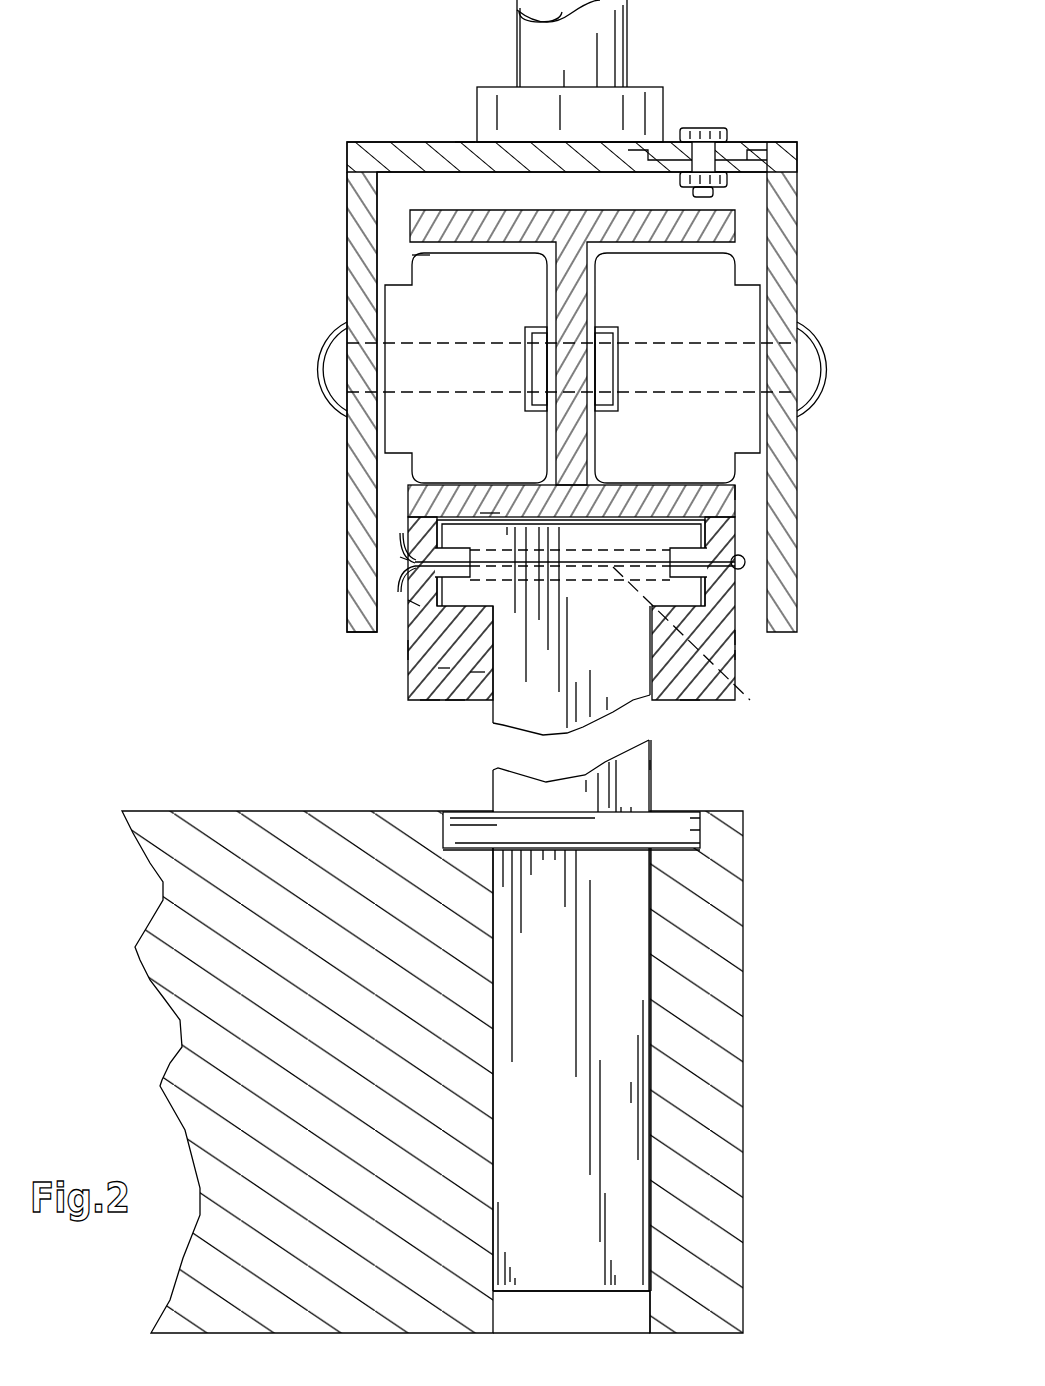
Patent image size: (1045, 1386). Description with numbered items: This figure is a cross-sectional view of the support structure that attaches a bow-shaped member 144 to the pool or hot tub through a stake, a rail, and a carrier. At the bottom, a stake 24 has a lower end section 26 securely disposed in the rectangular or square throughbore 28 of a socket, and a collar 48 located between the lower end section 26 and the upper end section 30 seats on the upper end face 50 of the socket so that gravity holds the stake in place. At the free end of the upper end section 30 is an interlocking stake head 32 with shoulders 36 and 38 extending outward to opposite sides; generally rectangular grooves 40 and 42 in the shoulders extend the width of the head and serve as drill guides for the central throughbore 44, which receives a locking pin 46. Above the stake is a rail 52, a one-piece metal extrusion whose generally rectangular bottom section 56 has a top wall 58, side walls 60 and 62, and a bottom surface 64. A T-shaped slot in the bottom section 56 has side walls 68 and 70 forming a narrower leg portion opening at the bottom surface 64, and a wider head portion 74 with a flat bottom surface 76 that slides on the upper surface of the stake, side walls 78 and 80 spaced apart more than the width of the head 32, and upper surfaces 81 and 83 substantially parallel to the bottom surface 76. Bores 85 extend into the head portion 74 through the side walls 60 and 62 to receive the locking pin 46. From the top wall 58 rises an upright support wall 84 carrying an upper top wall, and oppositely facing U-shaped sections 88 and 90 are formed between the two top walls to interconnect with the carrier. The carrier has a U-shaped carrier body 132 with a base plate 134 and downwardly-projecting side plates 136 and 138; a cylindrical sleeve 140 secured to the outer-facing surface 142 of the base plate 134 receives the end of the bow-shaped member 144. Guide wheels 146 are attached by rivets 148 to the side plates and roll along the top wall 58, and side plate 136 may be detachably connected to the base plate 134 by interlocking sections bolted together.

The stake 24 is at (662, 778).
The lower end section 26 is at (614, 975).
The throughbore 28 is at (649, 1133).
The upper end section 30 is at (500, 705).
The interlocking stake head 32 is at (733, 500).
The shoulder 36 is at (720, 600).
The shoulder 38 is at (407, 650).
The groove 40 is at (625, 535).
The groove 42 is at (445, 550).
The throughbore 44 is at (699, 638).
The locking pin 46 is at (683, 545).
The collar 48 is at (668, 823).
The upper end face 50 is at (673, 843).
The rail 52 is at (760, 648).
The bottom section 56 is at (438, 668).
The top wall 58 is at (737, 487).
The side wall 60 is at (700, 578).
The side wall 62 is at (440, 627).
The bottom surface 64 is at (427, 700).
The side wall 68 is at (695, 702).
The side wall 70 is at (453, 700).
The head portion 74 is at (410, 600).
The flat bottom surface 76 is at (480, 513).
The side wall 78 is at (745, 556).
The side wall 80 is at (400, 557).
The upper surface 81 is at (735, 640).
The upper surface 83 is at (470, 672).
The upright support wall 84 is at (583, 413).
The bore 85 is at (405, 595).
The U-shaped section 88 is at (749, 247).
The U-shaped section 90 is at (398, 252).
The U-shaped carrier body 132 is at (398, 163).
The base plate 134 is at (432, 153).
The side plate 136 is at (780, 170).
The side plate 138 is at (360, 182).
The cylindrical sleeve 140 is at (639, 103).
The outer-facing surface 142 is at (462, 138).
The bow-shaped member 144 is at (597, 33).
The guide wheel 146 is at (452, 313).
The rivet 148 is at (402, 368).